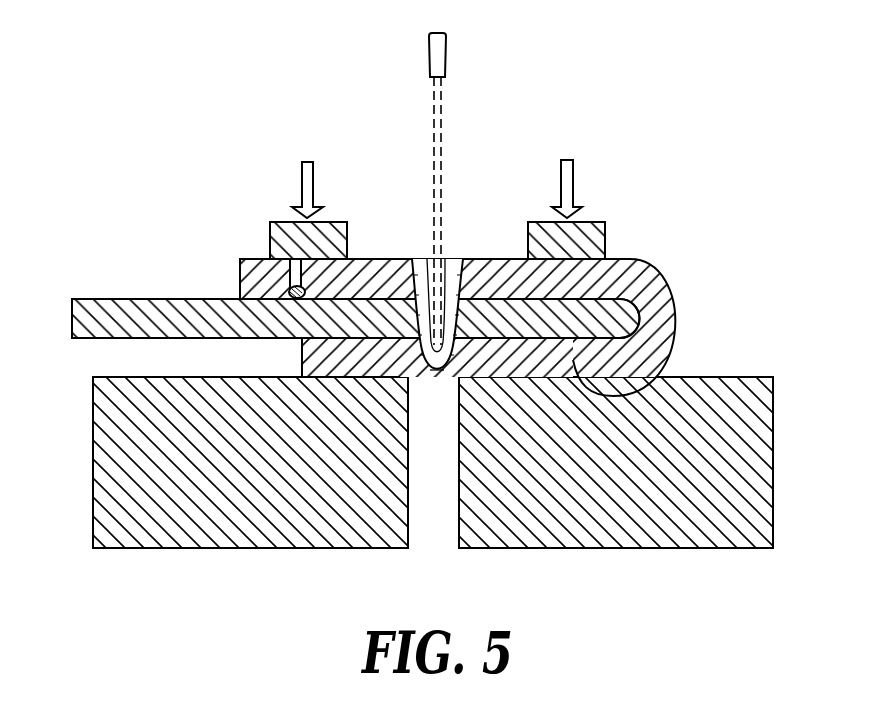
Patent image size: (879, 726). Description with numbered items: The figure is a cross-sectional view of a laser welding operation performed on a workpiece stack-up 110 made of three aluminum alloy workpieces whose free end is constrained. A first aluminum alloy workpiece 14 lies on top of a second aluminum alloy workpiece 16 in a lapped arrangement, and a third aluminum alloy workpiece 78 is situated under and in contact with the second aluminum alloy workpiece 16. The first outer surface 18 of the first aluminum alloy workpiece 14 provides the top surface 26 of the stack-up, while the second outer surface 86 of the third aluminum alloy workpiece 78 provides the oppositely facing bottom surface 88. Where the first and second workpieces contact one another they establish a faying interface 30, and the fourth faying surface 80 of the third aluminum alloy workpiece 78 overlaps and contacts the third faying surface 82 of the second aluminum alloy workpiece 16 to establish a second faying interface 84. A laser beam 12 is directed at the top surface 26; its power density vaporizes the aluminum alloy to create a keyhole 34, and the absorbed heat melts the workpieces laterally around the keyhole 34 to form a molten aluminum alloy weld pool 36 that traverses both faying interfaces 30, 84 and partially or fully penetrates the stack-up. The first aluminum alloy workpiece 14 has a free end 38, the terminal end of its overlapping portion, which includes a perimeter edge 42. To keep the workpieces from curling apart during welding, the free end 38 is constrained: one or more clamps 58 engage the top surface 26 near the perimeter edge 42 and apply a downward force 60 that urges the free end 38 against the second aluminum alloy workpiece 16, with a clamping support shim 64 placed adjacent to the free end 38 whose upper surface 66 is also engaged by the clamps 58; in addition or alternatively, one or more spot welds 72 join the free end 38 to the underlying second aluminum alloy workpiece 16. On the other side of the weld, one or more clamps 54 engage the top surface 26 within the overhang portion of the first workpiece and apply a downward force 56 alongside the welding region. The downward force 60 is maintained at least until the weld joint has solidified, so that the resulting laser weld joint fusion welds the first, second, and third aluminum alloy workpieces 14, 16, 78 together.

The laser beam 12 is at (443, 109).
The first aluminum alloy workpiece 14 is at (573, 275).
The second aluminum alloy workpiece 16 is at (608, 319).
The first outer surface 18 is at (371, 258).
The top surface 26 is at (490, 259).
The faying interface 30 is at (484, 304).
The keyhole 34 is at (452, 260).
The molten aluminum alloy weld pool 36 is at (414, 260).
The free end 38 is at (327, 262).
The perimeter edge 42 is at (271, 232).
The clamps 54 is at (588, 230).
The downward force 56 is at (567, 167).
The clamps 58 is at (283, 235).
The downward force 60 is at (307, 162).
The clamping support shim 64 is at (249, 271).
The upper surface 66 is at (249, 259).
The spot welds 72 is at (296, 291).
The third aluminum alloy workpiece 78 is at (627, 377).
The fourth faying surface 80 is at (332, 337).
The third faying surface 82 is at (352, 340).
The second faying interface 84 is at (388, 345).
The second outer surface 86 is at (443, 380).
The bottom surface 88 is at (423, 380).
The workpiece stack-up 110 is at (476, 252).